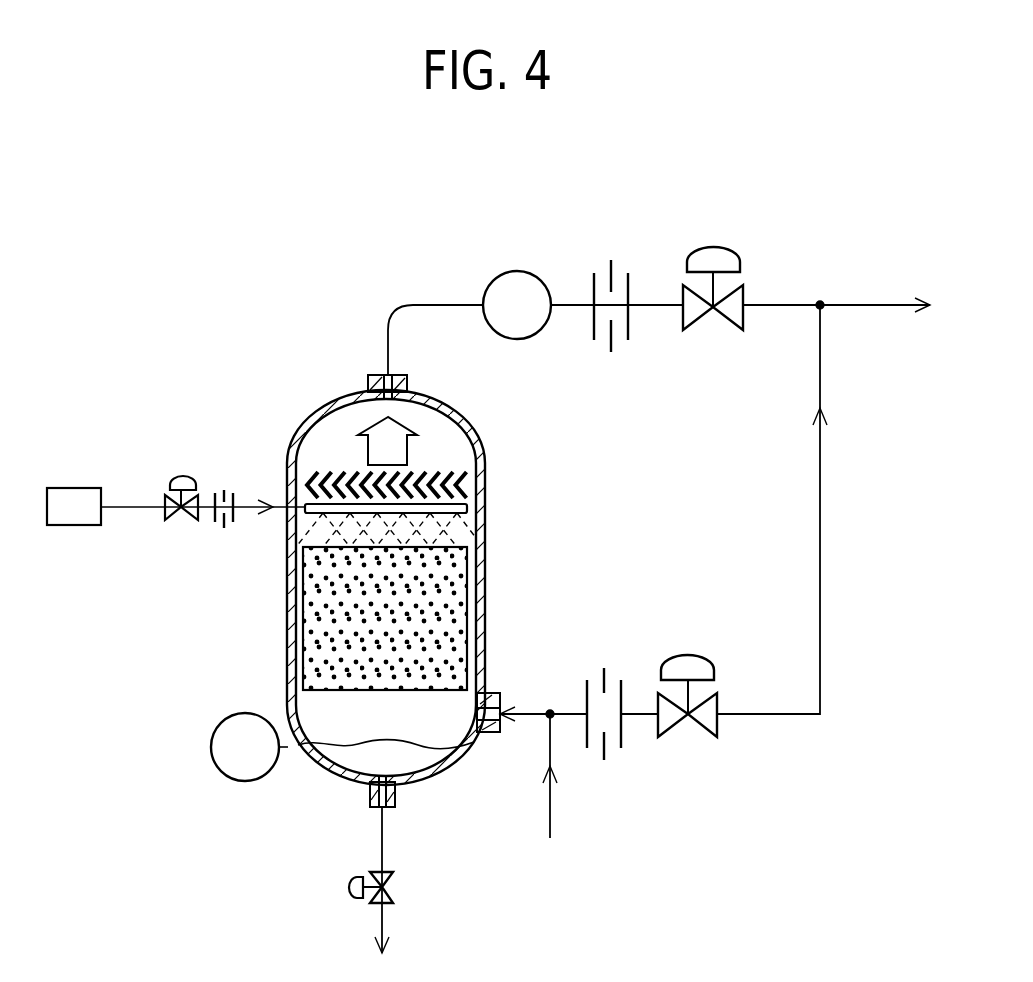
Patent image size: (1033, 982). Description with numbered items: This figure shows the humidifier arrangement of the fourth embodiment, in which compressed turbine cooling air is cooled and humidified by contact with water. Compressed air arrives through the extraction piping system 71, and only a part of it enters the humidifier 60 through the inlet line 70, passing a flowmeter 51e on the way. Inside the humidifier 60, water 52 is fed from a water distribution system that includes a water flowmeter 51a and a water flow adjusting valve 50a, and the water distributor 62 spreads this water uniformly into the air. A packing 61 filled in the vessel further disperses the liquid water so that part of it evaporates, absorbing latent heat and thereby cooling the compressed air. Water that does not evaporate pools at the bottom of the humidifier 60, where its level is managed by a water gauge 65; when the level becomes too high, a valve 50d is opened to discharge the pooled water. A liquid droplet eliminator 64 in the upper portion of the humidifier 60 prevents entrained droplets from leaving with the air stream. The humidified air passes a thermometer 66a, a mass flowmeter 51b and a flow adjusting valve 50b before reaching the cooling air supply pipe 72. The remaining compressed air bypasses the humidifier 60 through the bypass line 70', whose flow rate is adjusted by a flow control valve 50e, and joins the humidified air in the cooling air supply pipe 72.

The water 52 is at (75, 488).
The water flow adjusting valve 50a is at (181, 477).
The water flowmeter 51a is at (224, 490).
The humidifier 60 is at (485, 367).
The liquid droplet eliminator 64 is at (448, 473).
The water distributor 62 is at (467, 509).
The packing 61 is at (308, 621).
The water gauge 65 is at (210, 747).
The thermometer 66a is at (519, 271).
The mass flowmeter 51b is at (611, 260).
The flow adjusting valve 50b is at (713, 247).
The cooling air supply pipe 72 is at (868, 305).
The bypass line 70' is at (811, 509).
The flowmeter 51e is at (604, 668).
The flow control valve 50e is at (688, 655).
The inlet line 70 is at (531, 751).
The extraction piping system 71 is at (550, 812).
The valve 50d is at (346, 888).